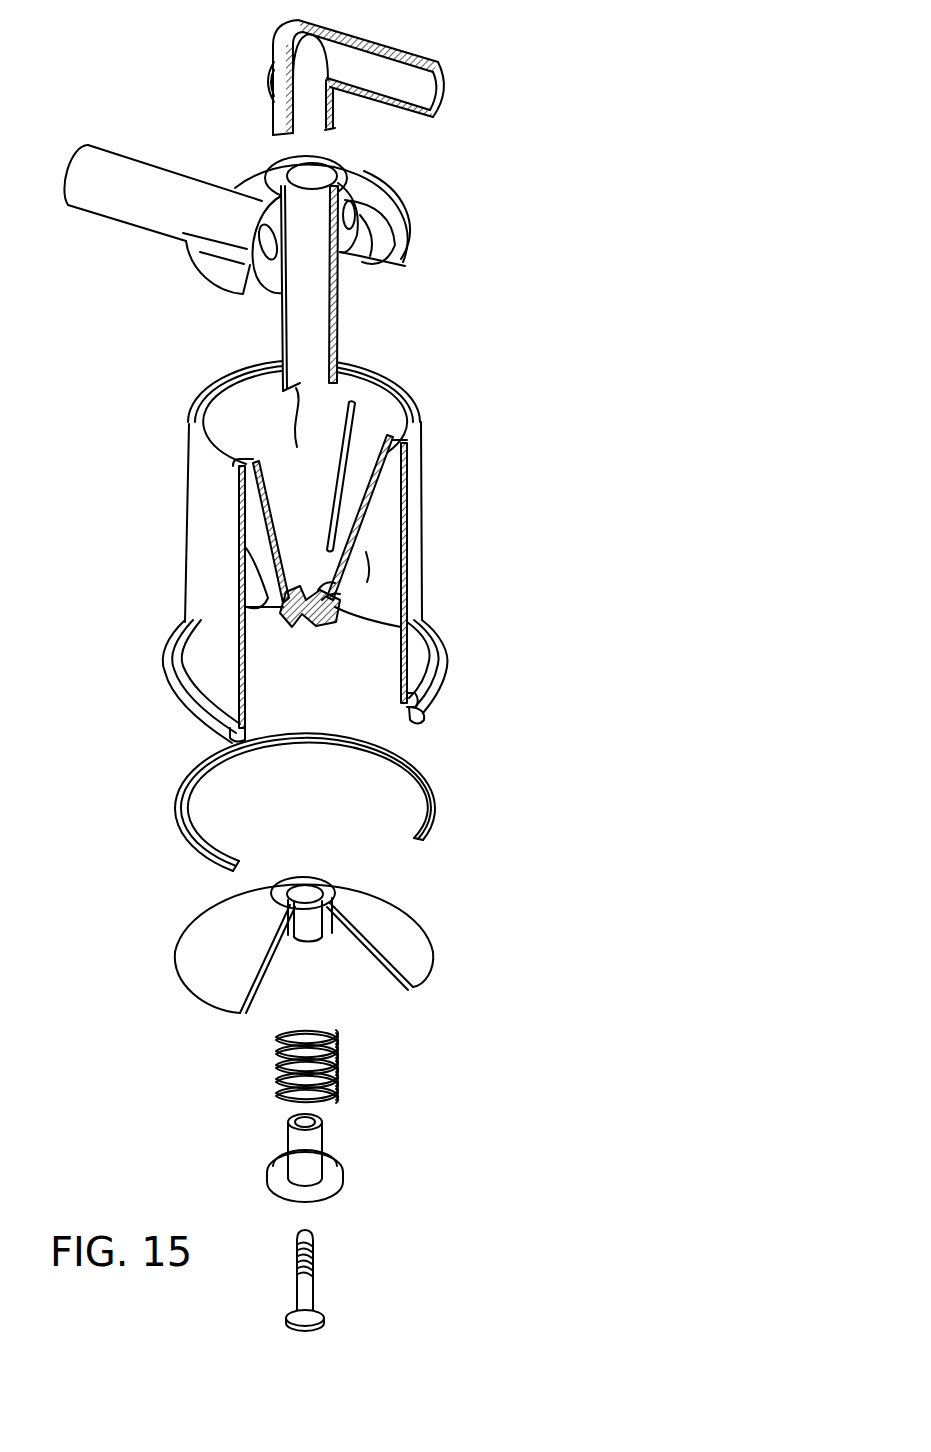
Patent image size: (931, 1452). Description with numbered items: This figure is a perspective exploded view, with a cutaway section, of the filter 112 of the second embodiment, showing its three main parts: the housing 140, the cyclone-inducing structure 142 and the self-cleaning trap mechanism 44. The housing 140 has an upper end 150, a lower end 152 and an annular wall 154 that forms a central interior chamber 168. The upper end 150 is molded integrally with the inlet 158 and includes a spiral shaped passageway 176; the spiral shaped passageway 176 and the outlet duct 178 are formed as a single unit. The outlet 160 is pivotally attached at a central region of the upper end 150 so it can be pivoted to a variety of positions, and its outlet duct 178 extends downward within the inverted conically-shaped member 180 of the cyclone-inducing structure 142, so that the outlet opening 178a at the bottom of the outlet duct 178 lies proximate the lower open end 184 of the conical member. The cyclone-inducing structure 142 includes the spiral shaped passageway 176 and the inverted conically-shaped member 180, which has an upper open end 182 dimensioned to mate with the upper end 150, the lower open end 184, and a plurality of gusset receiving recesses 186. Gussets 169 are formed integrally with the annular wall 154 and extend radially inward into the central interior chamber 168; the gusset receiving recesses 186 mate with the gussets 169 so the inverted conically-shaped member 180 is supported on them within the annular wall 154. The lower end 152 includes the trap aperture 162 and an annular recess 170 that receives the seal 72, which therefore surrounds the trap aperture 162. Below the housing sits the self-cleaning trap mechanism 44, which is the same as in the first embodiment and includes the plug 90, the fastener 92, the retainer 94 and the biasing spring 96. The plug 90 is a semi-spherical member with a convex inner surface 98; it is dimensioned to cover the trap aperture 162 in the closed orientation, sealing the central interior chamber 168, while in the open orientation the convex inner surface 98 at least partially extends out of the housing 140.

The filter 112 is at (594, 1340).
The outlet 160 is at (410, 53).
The inlet 158 is at (130, 172).
The upper end 150 is at (361, 230).
The spiral shaped passageway 176 is at (368, 238).
The outlet duct 178 is at (349, 318).
The outlet opening 178a is at (305, 431).
The cyclone-inducing structure 142 is at (301, 431).
The upper open end 182 is at (230, 383).
The inverted conically-shaped member 180 is at (377, 423).
The annular wall 154 is at (413, 493).
The housing 140 is at (331, 547).
The gusset receiving recesses 186 is at (335, 493).
The central interior chamber 168 is at (383, 530).
The gussets 169 is at (363, 563).
The lower open end 184 is at (333, 608).
The lower end 152 is at (435, 676).
The trap aperture 162 is at (413, 702).
The annular recess 170 is at (412, 718).
The self-cleaning trap mechanism 44 is at (513, 738).
The seal 72 is at (385, 760).
The plug 90 is at (332, 945).
The convex inner surface 98 is at (417, 953).
The biasing spring 96 is at (337, 1063).
The retainer 94 is at (333, 1186).
The fastener 92 is at (317, 1289).